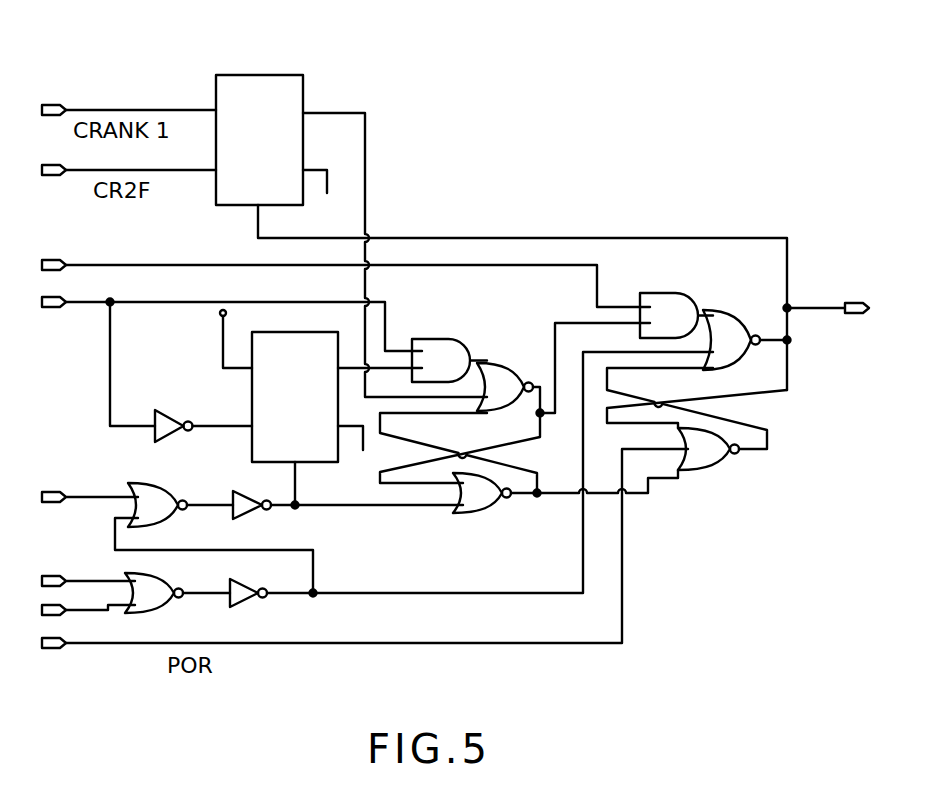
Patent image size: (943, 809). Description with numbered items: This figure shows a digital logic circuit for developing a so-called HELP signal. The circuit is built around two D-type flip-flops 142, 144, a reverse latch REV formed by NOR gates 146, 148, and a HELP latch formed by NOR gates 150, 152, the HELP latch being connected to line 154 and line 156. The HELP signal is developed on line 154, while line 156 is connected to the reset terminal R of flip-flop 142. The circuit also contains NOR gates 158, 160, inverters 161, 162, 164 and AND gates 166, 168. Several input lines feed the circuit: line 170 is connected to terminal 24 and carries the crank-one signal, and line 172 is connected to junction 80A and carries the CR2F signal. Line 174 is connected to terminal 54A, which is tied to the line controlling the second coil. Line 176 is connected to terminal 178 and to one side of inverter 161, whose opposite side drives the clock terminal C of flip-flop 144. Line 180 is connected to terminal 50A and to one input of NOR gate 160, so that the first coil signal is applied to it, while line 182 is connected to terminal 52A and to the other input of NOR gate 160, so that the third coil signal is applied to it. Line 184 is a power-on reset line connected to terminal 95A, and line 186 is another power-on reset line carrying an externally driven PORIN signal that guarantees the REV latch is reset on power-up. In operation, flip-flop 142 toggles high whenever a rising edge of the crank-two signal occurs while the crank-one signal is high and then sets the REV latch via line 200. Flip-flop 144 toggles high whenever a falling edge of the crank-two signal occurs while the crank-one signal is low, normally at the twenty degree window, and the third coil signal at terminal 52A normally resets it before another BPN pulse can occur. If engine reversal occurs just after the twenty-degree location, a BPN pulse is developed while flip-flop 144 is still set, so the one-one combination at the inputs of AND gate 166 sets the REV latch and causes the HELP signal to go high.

The terminal 24 is at (63, 107).
The line 170 is at (127, 110).
The junction 80A is at (53, 173).
The line 172 is at (162, 170).
The D-type flip-flop 142 is at (263, 73).
The line 200 is at (367, 152).
The line 156 is at (540, 238).
The terminal 54A is at (57, 263).
The line 174 is at (162, 263).
The terminal 178 is at (63, 307).
The line 176 is at (90, 307).
The D-type flip-flop 144 is at (278, 332).
The inverter 161 is at (177, 423).
The AND gate 166 is at (433, 342).
The NOR gate 146 is at (498, 380).
The NOR gate 148 is at (472, 503).
The AND gate 168 is at (653, 297).
The NOR gate 150 is at (735, 337).
The NOR gate 152 is at (712, 452).
The line 154 is at (808, 308).
The line 186 is at (53, 490).
The NOR gate 158 is at (147, 493).
The inverter 162 is at (240, 513).
The line 180 is at (97, 578).
The terminal 50A is at (55, 578).
The terminal 52A is at (42, 612).
The line 182 is at (82, 615).
The NOR gate 160 is at (147, 597).
The inverter 164 is at (250, 600).
The terminal 95A is at (62, 645).
The line 184 is at (482, 645).